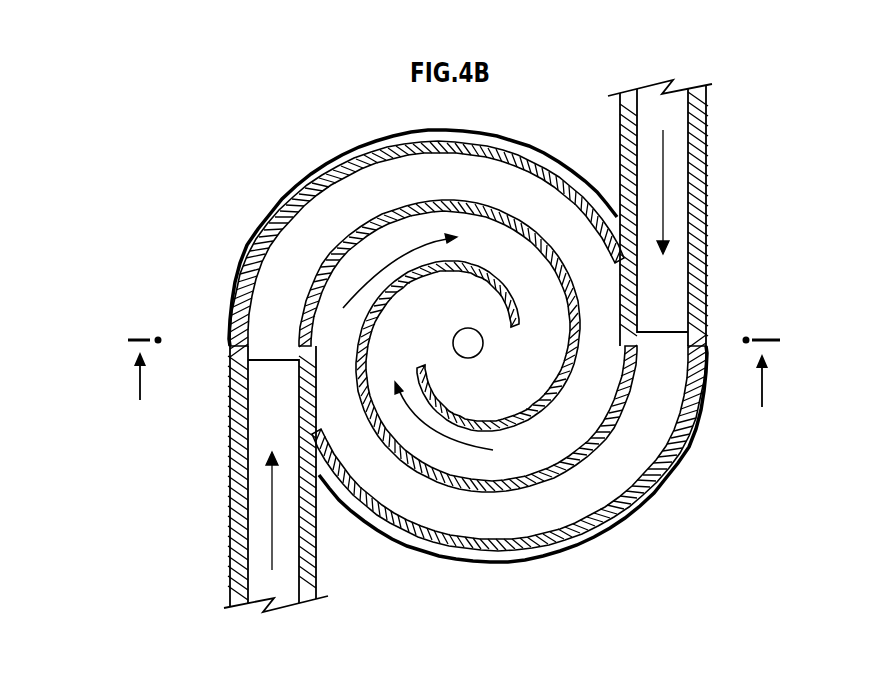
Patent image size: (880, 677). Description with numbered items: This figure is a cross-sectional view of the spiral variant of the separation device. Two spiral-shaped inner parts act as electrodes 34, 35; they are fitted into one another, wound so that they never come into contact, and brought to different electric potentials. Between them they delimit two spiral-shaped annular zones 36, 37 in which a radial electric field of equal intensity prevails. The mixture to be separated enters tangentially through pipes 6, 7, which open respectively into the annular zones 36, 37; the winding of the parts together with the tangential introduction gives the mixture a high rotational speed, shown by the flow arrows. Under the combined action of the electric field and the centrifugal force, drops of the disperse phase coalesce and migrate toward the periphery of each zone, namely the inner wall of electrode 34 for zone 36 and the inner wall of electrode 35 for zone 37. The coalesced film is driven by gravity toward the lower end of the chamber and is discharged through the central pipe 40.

The pipe 6 is at (675, 180).
The pipe 7 is at (260, 518).
The electrode 34 is at (680, 440).
The electrode 35 is at (303, 190).
The annular zone 36 is at (607, 455).
The annular zone 37 is at (385, 187).
The pipe 40 is at (472, 345).